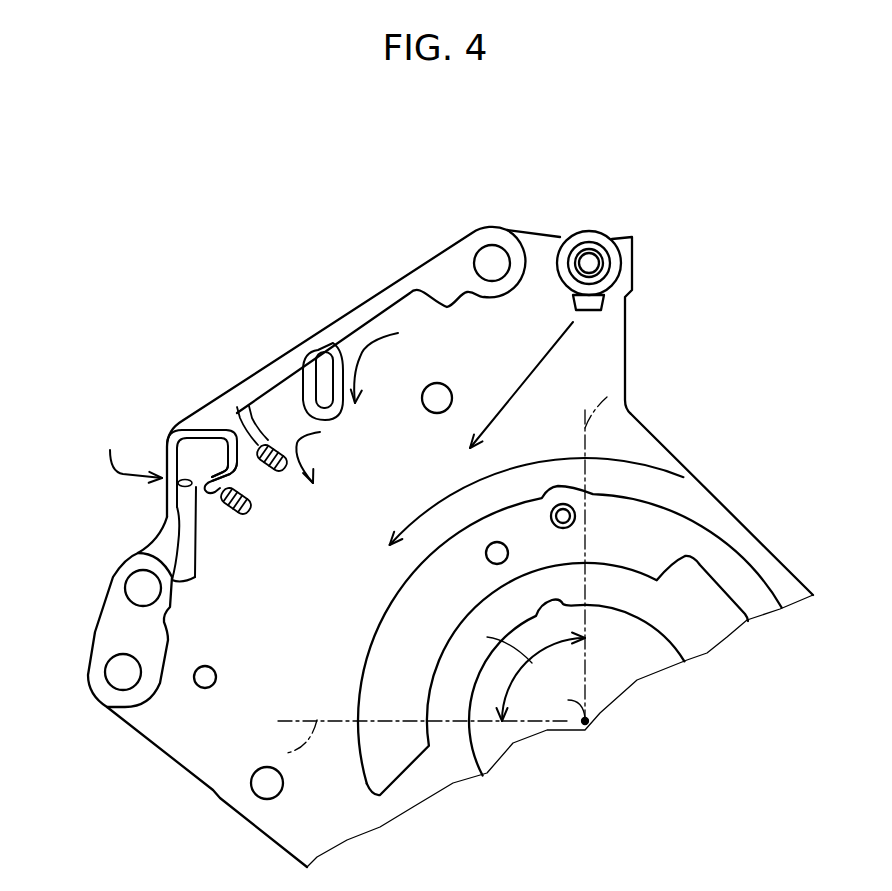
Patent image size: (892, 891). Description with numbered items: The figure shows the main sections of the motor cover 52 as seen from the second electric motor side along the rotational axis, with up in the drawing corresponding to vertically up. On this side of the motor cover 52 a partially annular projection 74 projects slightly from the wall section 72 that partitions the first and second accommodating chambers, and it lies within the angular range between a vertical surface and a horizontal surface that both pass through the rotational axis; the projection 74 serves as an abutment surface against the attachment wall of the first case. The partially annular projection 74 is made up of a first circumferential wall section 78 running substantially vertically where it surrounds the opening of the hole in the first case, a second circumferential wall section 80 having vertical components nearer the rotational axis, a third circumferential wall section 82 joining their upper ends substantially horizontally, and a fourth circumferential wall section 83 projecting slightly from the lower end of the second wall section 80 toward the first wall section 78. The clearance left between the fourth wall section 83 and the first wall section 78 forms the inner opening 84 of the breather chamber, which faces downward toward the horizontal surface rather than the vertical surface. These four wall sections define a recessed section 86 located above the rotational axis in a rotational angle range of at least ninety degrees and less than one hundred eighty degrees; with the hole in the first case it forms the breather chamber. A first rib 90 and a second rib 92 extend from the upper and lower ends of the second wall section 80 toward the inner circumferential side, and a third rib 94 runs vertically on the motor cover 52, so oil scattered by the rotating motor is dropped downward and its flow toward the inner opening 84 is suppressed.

The motor cover 52 is at (663, 183).
The wall section 72 is at (222, 720).
The partially annular projection 74 is at (395, 275).
The first circumferential wall section 78 is at (170, 460).
The second circumferential wall section 80 is at (233, 467).
The third circumferential wall section 82 is at (212, 425).
The fourth circumferential wall section 83 is at (207, 487).
The inner opening 84 is at (190, 483).
The recessed section 86 is at (195, 452).
The first rib 90 is at (222, 503).
The second rib 92 is at (265, 450).
The third rib 94 is at (323, 373).